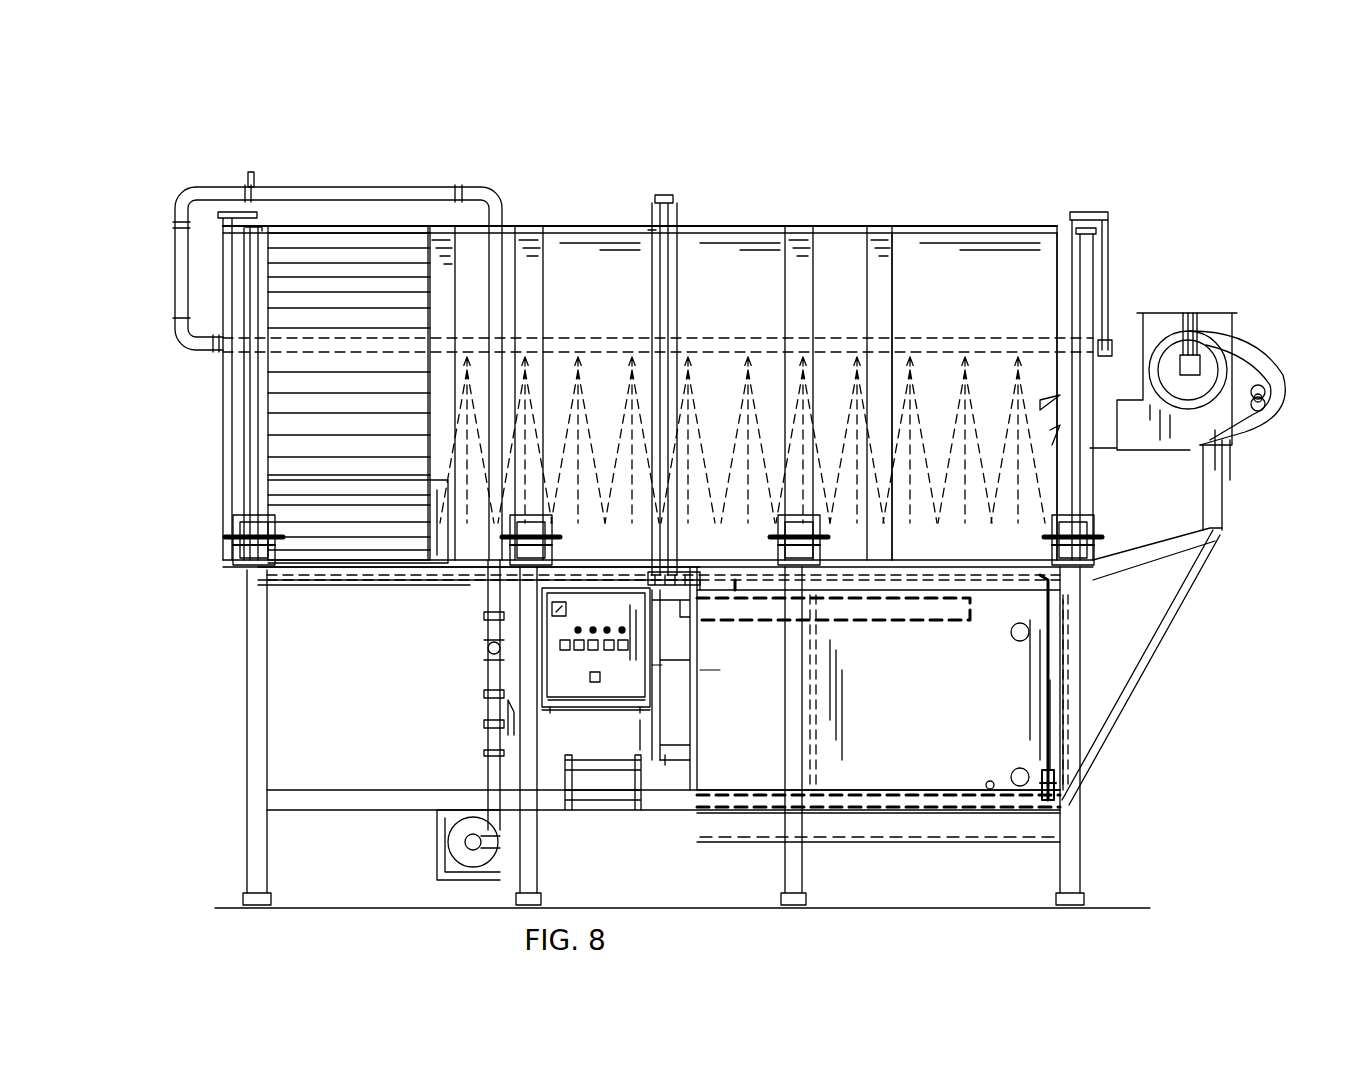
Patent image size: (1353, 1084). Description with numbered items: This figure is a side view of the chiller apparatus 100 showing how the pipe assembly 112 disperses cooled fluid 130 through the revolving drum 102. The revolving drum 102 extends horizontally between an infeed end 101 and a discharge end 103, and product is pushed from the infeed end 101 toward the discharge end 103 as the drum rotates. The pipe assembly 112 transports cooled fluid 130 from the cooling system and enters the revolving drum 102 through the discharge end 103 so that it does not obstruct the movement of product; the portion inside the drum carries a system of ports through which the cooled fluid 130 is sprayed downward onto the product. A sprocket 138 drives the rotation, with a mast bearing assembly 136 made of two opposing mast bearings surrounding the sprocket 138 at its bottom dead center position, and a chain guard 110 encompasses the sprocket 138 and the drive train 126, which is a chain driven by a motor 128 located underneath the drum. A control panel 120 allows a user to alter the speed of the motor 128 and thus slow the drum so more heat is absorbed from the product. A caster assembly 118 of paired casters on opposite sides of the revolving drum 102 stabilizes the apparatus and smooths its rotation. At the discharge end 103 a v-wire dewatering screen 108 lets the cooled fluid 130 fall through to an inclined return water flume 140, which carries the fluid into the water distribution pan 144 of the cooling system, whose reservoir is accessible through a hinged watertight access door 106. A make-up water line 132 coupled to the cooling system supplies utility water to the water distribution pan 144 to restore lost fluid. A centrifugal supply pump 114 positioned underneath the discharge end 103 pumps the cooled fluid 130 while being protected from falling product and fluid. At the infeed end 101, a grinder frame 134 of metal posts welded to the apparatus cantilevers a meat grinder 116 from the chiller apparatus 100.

The chiller apparatus 100 is at (777, 190).
The infeed end 101 is at (1133, 250).
The revolving drum 102 is at (937, 245).
The discharge end 103 is at (148, 236).
The watertight access door 106 is at (1080, 705).
The dewatering screen 108 is at (312, 270).
The chain guard 110 is at (660, 195).
The pipe assembly 112 is at (400, 190).
The supply pump 114 is at (458, 830).
The meat grinder 116 is at (1160, 312).
The caster assembly 118 is at (233, 537).
The control panel 120 is at (632, 690).
The drive train 126 is at (664, 668).
The motor 128 is at (665, 762).
The cooled fluid 130 is at (728, 470).
The make-up water line 132 is at (1050, 790).
The grinder frame 134 is at (1240, 533).
The mast bearing assembly 136 is at (675, 590).
The sprocket 138 is at (656, 215).
The return water flume 140 is at (355, 578).
The water distribution pan 144 is at (1075, 600).